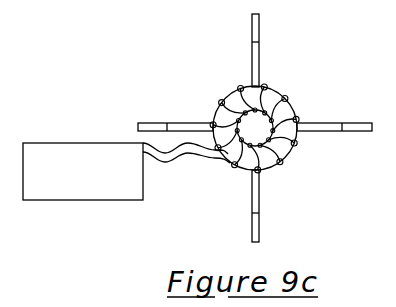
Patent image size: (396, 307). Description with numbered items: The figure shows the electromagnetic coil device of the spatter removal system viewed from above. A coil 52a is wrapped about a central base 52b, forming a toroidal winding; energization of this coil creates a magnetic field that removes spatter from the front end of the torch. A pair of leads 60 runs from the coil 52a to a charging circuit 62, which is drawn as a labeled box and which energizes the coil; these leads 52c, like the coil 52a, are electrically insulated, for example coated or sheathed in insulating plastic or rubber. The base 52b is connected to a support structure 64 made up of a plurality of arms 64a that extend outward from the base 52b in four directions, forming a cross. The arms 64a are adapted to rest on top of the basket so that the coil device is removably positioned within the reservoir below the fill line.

The support structure 64 is at (256, 128).
The arms 64a is at (260, 27).
The base 52b is at (284, 98).
The coil 52a is at (294, 150).
The leads 52c is at (195, 151).
The pair of leads 60 is at (173, 169).
The charging circuit 62 is at (85, 202).